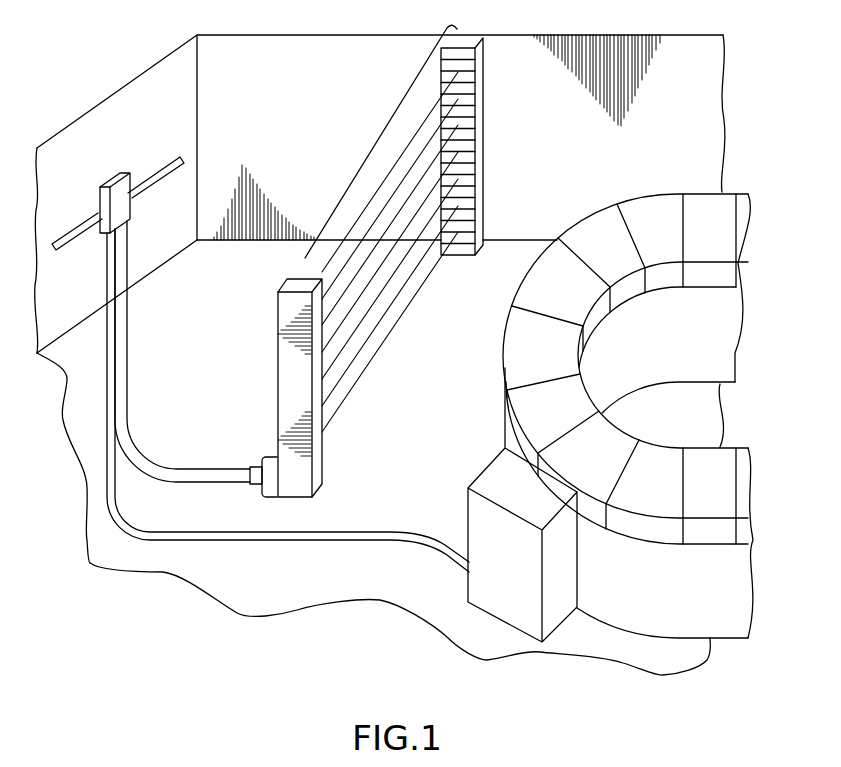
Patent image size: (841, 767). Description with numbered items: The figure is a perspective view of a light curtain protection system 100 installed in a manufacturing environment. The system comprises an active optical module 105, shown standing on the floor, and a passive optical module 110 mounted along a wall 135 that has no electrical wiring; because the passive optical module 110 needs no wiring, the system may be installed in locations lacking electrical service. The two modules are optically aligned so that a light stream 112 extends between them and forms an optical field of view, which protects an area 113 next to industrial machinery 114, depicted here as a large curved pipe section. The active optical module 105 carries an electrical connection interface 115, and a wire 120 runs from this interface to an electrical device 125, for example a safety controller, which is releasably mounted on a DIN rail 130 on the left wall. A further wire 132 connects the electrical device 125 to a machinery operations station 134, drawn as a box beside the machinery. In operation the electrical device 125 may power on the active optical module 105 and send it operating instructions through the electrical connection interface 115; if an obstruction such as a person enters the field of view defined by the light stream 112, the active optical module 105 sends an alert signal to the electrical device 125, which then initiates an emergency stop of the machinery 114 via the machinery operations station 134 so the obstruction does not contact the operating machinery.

The light curtain protection system 100 is at (319, 110).
The active optical module 105 is at (315, 472).
The passive optical module 110 is at (480, 145).
The light stream 112 is at (370, 152).
The area 113 is at (478, 323).
The industrial machinery 114 is at (503, 368).
The electrical connection interface 115 is at (261, 493).
The wire 120 is at (128, 373).
The electrical device 125 is at (127, 172).
The DIN rail 130 is at (85, 233).
The wire 132 is at (330, 540).
The machinery operations station 134 is at (553, 603).
The wall 135 is at (688, 110).